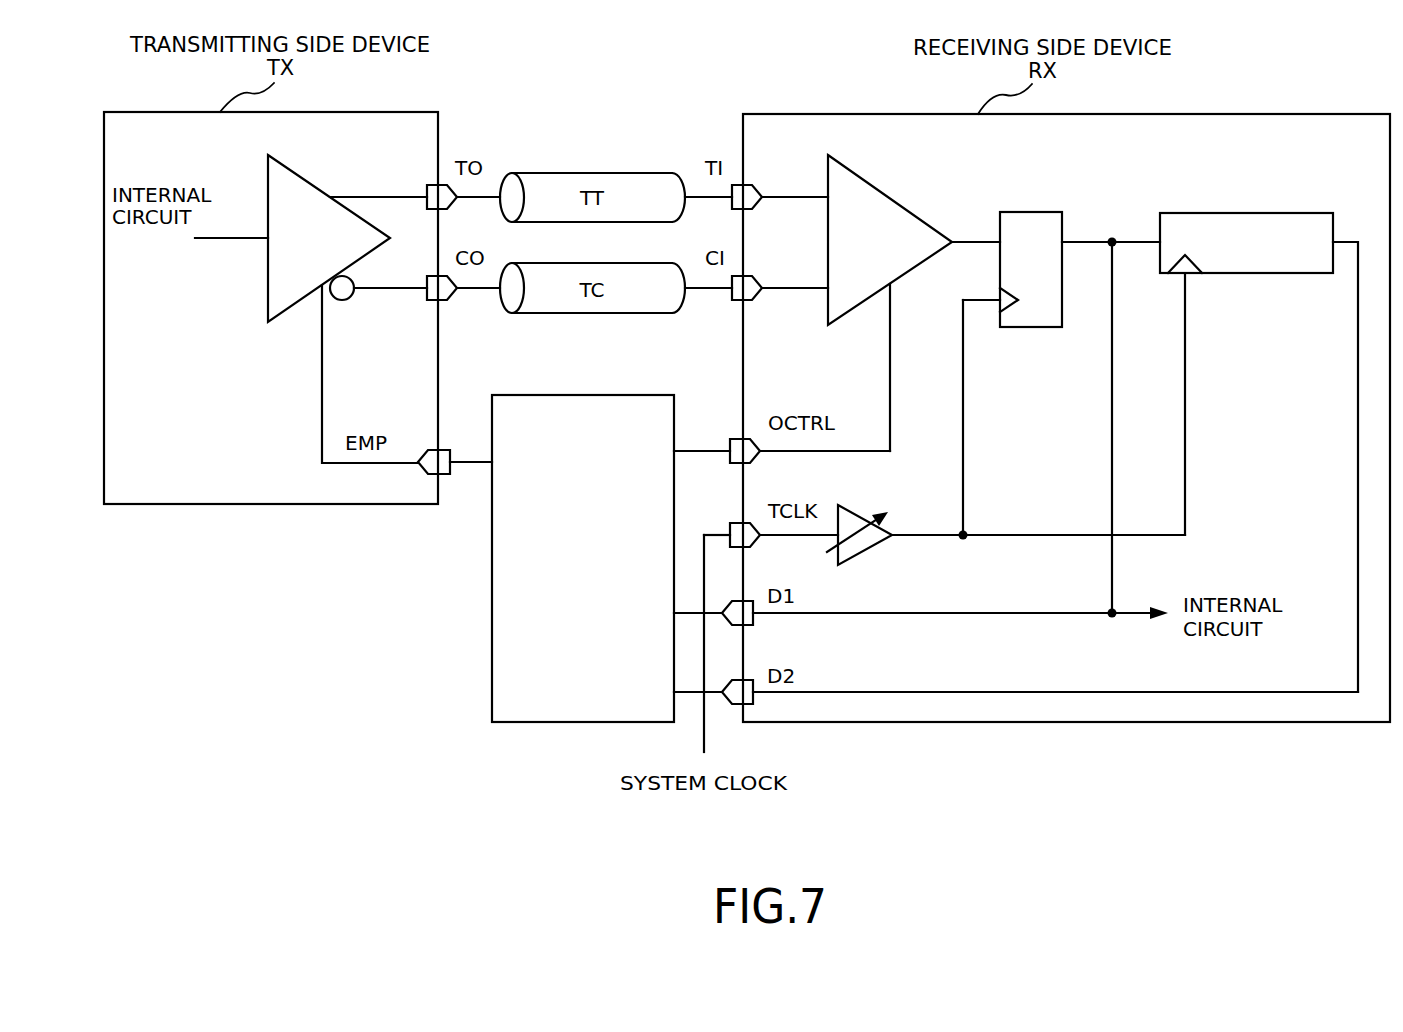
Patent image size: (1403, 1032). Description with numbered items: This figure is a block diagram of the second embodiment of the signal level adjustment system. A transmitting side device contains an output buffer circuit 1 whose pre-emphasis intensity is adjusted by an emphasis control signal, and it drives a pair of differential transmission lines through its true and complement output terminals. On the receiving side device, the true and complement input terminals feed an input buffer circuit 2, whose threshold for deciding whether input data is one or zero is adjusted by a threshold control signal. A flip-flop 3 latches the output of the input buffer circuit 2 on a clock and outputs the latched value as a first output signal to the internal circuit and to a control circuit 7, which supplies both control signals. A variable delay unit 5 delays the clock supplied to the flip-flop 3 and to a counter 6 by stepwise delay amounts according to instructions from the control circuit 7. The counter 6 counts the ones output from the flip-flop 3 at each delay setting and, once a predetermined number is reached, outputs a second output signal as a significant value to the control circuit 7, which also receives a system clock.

The output buffer circuit 1 is at (305, 177).
The input buffer circuit 2 is at (873, 187).
The flip-flop 3 is at (1040, 212).
The variable delay unit 5 is at (870, 548).
The counter 6 is at (1285, 213).
The control circuit 7 is at (525, 722).